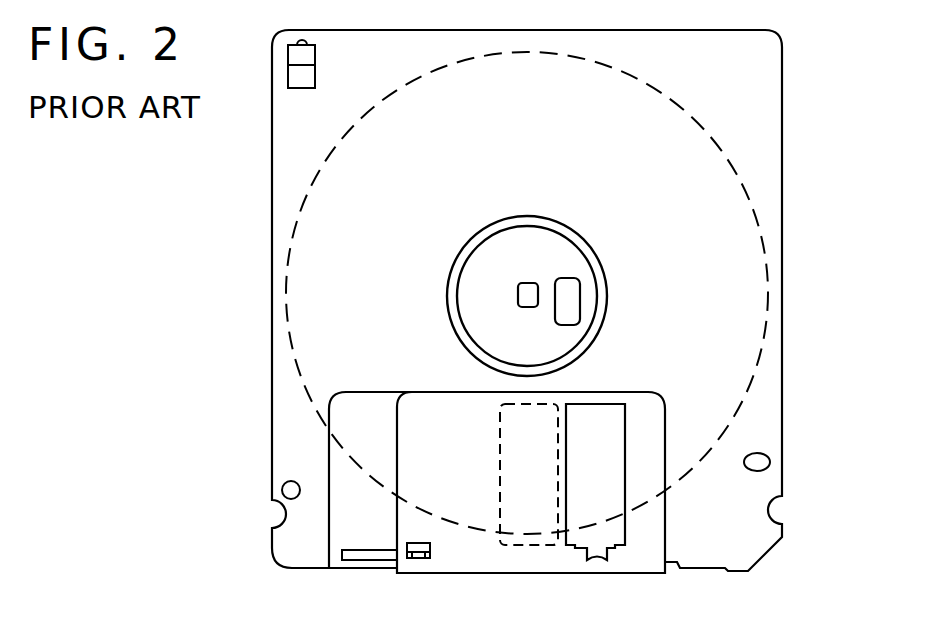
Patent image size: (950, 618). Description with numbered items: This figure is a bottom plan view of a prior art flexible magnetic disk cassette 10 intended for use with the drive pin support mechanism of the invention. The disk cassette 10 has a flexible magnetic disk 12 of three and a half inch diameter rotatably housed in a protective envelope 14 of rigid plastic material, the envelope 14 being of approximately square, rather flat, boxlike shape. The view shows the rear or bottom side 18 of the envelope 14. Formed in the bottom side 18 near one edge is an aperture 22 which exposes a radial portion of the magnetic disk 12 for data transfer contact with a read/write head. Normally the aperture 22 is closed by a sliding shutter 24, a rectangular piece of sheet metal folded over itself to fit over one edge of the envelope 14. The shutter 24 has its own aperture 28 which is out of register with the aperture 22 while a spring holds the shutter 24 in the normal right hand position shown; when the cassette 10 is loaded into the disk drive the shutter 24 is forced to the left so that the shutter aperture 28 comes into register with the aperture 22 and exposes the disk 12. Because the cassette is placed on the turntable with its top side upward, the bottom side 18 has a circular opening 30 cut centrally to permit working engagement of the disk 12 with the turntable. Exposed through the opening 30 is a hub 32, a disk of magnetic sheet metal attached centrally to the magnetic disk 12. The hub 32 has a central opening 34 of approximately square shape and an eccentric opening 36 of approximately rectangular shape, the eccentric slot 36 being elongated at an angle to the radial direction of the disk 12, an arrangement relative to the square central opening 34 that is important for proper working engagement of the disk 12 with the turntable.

The disk cassette 10 is at (246, 206).
The flexible magnetic disk 12 is at (786, 203).
The protective envelope 14 is at (804, 92).
The bottom side 18 is at (283, 428).
The aperture 22 is at (504, 405).
The sliding shutter 24 is at (473, 566).
The shutter aperture 28 is at (566, 423).
The circular opening 30 is at (458, 271).
The hub 32 is at (532, 238).
The central opening 34 is at (518, 285).
The eccentric opening 36 is at (578, 295).